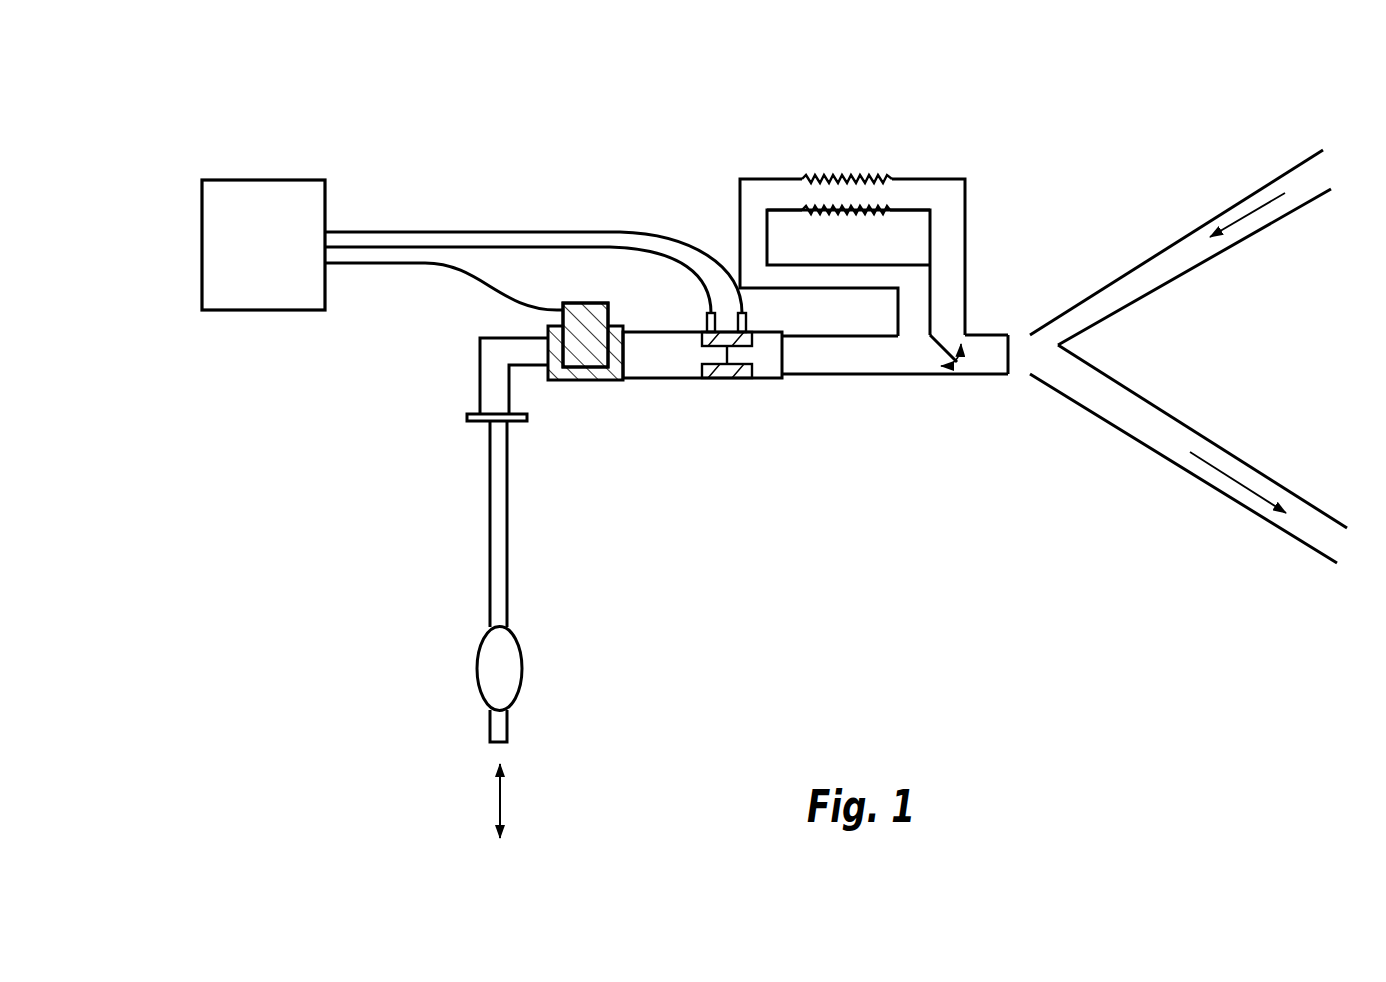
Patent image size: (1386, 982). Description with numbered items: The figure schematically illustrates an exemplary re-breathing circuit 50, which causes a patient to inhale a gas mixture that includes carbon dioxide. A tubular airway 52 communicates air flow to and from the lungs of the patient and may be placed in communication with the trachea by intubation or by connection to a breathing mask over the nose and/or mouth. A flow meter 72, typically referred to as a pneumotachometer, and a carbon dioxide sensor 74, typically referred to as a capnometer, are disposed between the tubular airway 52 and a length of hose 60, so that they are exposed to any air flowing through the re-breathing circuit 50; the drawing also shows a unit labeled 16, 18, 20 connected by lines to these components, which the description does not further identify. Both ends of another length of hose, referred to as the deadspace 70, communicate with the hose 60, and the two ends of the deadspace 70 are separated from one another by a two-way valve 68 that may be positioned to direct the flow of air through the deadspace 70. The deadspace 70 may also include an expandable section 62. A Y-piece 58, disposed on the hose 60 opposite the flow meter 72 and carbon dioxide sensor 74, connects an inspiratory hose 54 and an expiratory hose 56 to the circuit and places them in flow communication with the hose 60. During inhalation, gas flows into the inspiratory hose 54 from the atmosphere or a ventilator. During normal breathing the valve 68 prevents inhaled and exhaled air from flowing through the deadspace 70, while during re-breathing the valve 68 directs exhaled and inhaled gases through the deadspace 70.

The controller/processor unit 16 is at (472, 201).
The controller/processor unit 18 is at (472, 201).
The controller/processor unit 20 is at (268, 195).
The re-breathing circuit 50 is at (1177, 309).
The tubular airway 52 is at (488, 547).
The inspiratory hose 54 is at (1207, 258).
The expiratory hose 56 is at (1192, 426).
The Y-piece 58 is at (1016, 333).
The hose 60 is at (800, 362).
The expandable section 62 is at (843, 166).
The two-way valve 68 is at (966, 400).
The deadspace 70 is at (900, 186).
The flow meter 72 is at (720, 398).
The carbon dioxide sensor 74 is at (590, 413).